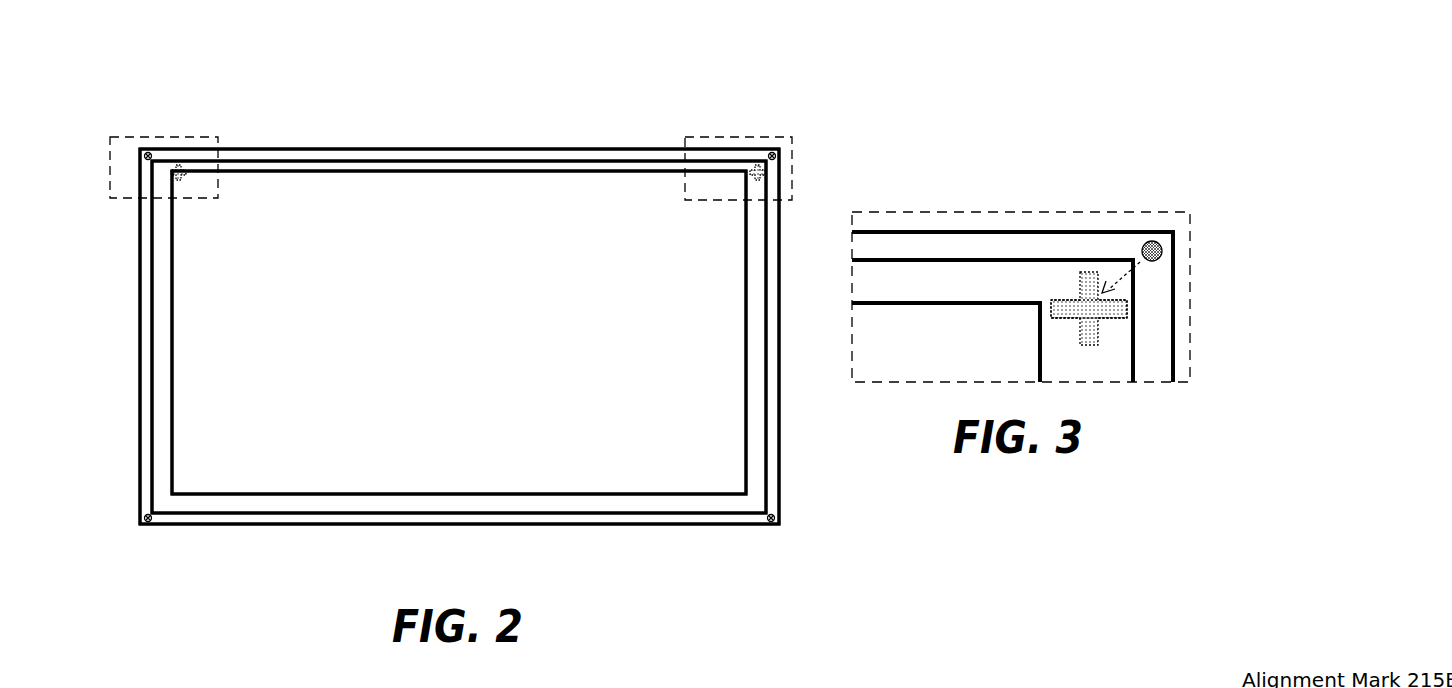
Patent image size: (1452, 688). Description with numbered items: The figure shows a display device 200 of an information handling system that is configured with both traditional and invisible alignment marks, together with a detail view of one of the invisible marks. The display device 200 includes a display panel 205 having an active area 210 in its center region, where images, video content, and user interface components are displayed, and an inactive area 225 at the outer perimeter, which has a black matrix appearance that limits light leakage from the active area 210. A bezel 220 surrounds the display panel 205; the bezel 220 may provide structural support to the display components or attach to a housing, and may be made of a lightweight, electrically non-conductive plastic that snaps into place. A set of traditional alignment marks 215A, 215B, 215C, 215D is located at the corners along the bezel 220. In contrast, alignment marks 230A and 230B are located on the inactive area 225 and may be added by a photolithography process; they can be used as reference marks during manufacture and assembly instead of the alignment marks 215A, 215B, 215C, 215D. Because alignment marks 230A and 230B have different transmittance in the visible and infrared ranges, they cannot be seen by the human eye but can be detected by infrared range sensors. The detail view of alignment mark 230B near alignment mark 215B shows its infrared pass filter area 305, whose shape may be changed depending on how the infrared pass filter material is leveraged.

In FIG. 2, the display device 200 is at (255, 78).
In FIG. 2, the display panel 205 is at (780, 438).
In FIG. 3, the display panel 205 is at (992, 321).
In FIG. 2, the active area 210 is at (538, 347).
In FIG. 3, the active area 210 is at (946, 342).
In FIG. 2, the alignment mark 215A is at (425, 111).
In FIG. 2, the alignment mark 215B is at (1018, 126).
In FIG. 3, the alignment mark 215B is at (1430, 221).
In FIG. 2, the alignment mark 215C is at (407, 577).
In FIG. 2, the alignment mark 215D is at (818, 572).
In FIG. 2, the bezel 220 is at (568, 150).
In FIG. 3, the bezel 220 is at (1012, 307).
In FIG. 2, the inactive area 225 is at (977, 492).
In FIG. 2, the alignment mark 230A is at (440, 144).
In FIG. 2, the alignment mark 230B is at (1045, 186).
In FIG. 3, the alignment mark 230B is at (1443, 304).
In FIG. 3, the infrared pass filter area 305 is at (1097, 318).